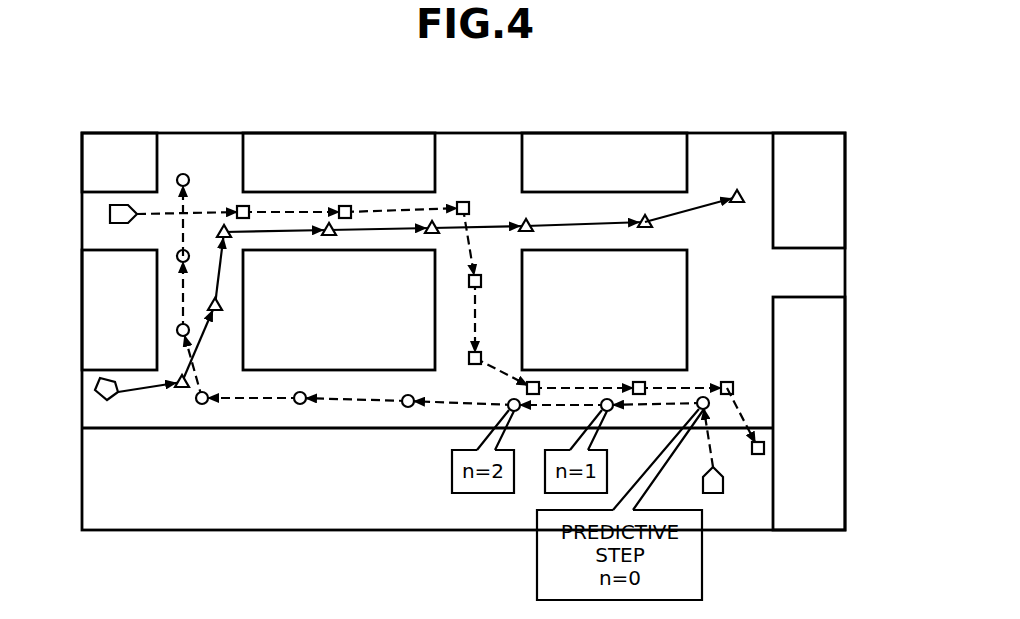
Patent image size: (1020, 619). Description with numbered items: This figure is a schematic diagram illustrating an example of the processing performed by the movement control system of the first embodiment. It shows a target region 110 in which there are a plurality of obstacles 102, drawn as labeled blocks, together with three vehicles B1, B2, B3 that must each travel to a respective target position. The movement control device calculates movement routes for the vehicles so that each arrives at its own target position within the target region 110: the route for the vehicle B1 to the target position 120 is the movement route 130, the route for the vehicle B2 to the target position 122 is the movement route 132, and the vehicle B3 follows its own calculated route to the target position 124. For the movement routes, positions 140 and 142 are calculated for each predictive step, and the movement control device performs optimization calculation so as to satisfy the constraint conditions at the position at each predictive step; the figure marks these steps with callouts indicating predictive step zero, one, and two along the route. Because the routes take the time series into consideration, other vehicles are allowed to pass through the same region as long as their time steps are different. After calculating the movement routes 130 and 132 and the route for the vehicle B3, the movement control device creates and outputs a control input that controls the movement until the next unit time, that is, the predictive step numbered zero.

The obstacle 102 is at (395, 289).
The target region 110 is at (810, 140).
The target position 120 is at (737, 189).
The target position 122 is at (183, 172).
The target position 124 is at (767, 452).
The movement route 130 is at (385, 238).
The movement route 132 is at (445, 422).
The position 140 is at (526, 218).
The position 142 is at (408, 407).
The vehicle B1 is at (97, 389).
The vehicle B2 is at (715, 494).
The vehicle B3 is at (110, 214).